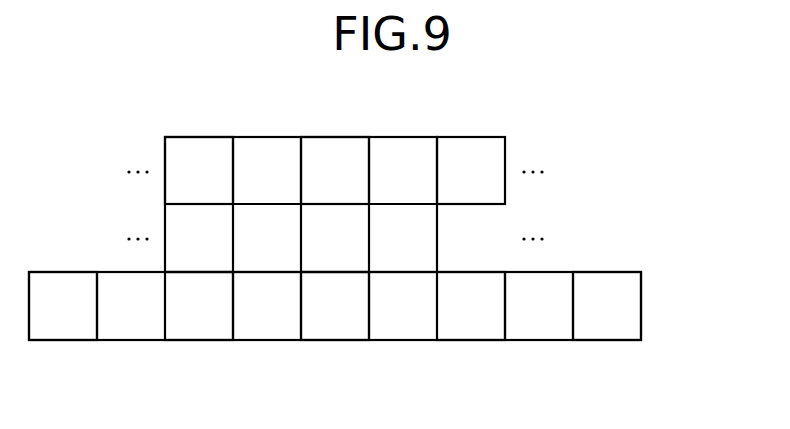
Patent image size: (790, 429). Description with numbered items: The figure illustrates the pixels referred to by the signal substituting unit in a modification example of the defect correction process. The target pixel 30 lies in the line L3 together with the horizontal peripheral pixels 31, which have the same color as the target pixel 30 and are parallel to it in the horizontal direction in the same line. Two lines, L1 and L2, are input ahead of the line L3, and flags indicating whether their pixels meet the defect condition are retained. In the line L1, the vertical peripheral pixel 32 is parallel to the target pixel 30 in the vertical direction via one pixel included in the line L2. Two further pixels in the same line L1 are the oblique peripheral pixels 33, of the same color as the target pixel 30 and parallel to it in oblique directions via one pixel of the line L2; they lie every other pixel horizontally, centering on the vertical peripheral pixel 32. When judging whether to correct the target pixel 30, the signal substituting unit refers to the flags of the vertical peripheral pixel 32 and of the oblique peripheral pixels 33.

The target pixel 30 is at (334, 342).
The horizontal peripheral pixel 31 is at (64, 342).
The vertical peripheral pixel 32 is at (333, 136).
The oblique peripheral pixels 33 is at (199, 136).
The line L1 is at (561, 174).
The line L2 is at (561, 243).
The line L3 is at (647, 309).